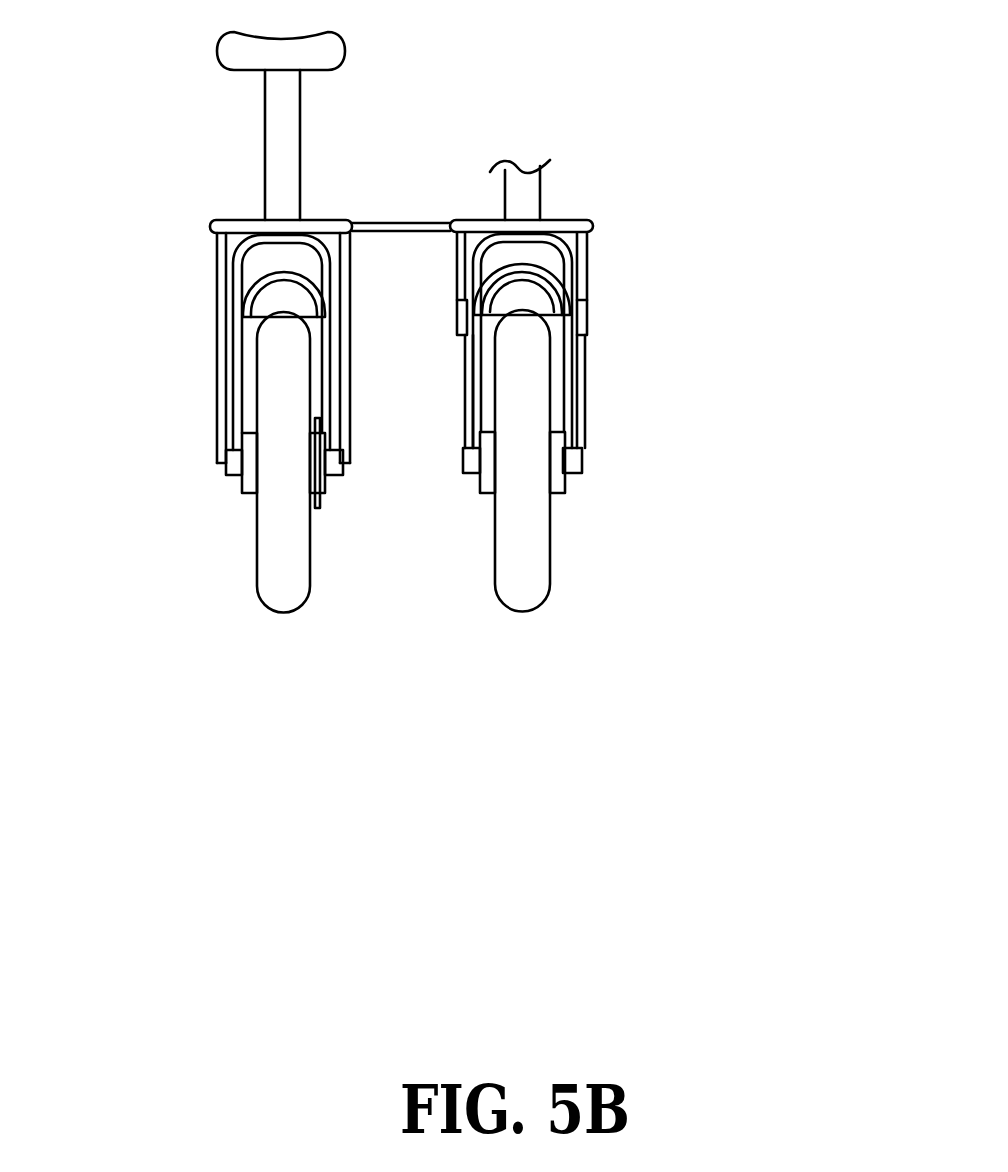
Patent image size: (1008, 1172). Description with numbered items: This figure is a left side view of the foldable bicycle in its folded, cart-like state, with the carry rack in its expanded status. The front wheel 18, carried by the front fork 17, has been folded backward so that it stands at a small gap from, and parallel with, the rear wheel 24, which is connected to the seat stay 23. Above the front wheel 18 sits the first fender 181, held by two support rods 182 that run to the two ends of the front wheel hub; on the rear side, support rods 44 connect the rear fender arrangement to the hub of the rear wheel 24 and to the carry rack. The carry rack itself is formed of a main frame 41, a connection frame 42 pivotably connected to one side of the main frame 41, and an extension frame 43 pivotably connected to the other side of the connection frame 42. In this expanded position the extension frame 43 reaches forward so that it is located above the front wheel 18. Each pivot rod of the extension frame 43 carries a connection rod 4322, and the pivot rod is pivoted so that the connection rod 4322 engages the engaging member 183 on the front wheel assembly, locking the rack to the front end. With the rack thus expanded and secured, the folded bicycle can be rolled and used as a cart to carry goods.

The main frame 41 is at (235, 223).
The connection frame 42 is at (405, 221).
The extension frame 43 is at (565, 222).
The connection rod 4322 is at (577, 270).
The front fork 17 is at (590, 233).
The first fender 181 is at (533, 280).
The engaging member 183 is at (588, 313).
The support rods 44 is at (218, 318).
The seat stay 23 is at (235, 363).
The support rods 182 is at (579, 399).
The rear wheel 24 is at (290, 585).
The front wheel 18 is at (528, 590).